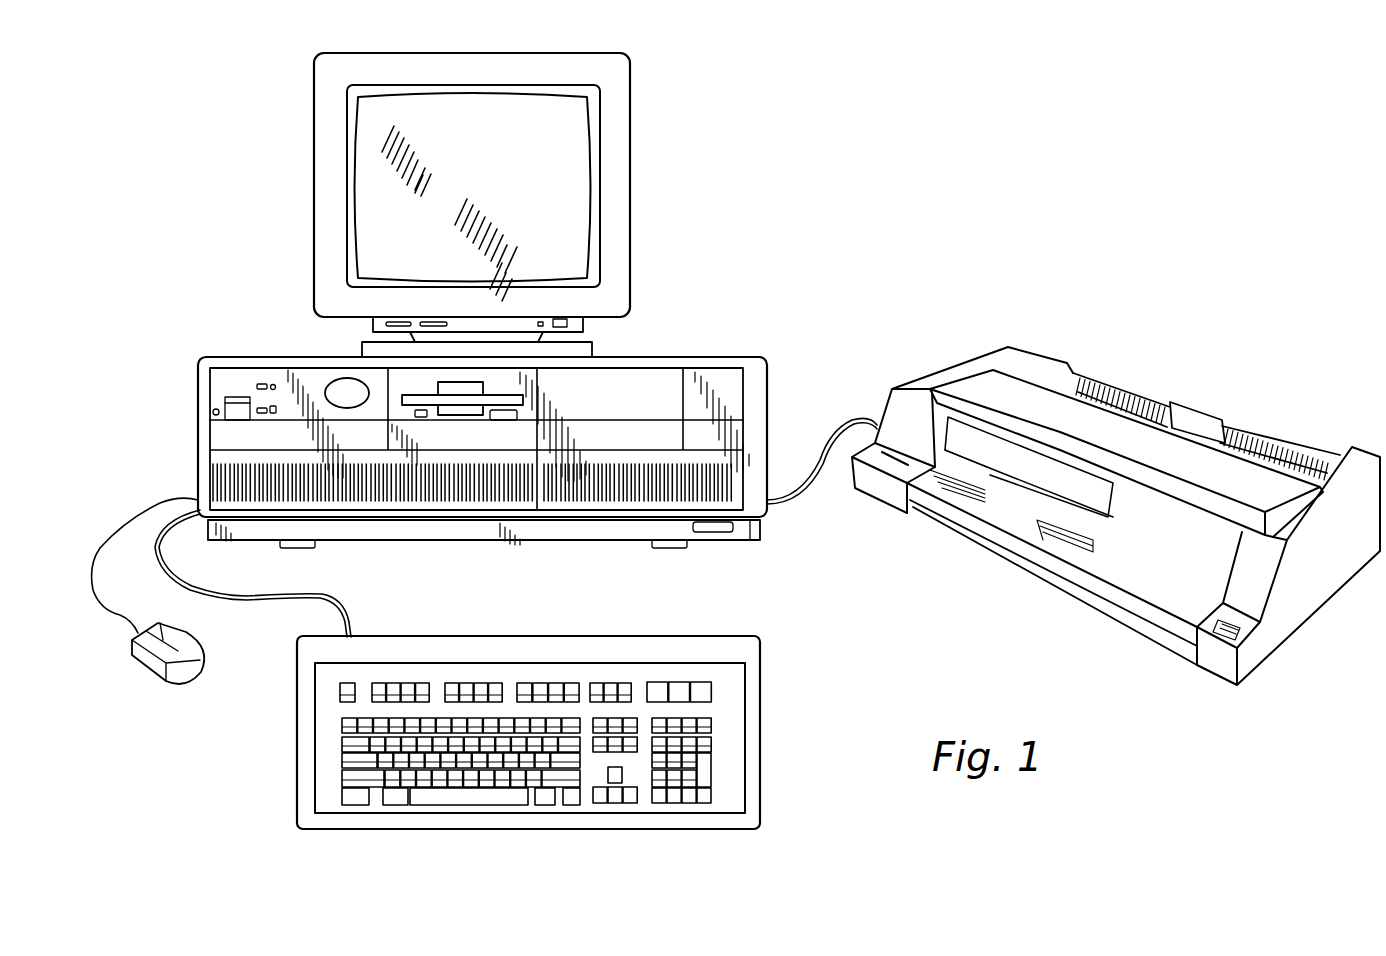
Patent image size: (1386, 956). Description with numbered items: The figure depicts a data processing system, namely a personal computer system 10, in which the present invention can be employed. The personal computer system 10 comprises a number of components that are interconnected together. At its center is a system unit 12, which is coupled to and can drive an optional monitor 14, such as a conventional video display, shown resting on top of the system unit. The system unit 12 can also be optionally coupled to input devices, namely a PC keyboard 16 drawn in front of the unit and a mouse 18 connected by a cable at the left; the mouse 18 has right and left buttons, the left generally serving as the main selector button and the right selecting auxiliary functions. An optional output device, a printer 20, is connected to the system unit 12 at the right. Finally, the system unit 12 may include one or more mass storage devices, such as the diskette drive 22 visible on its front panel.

The personal computer system 10 is at (838, 170).
The system unit 12 is at (692, 348).
The monitor 14 is at (640, 216).
The PC keyboard 16 is at (637, 632).
The mouse 18 is at (148, 660).
The printer 20 is at (950, 358).
The diskette drive 22 is at (468, 405).